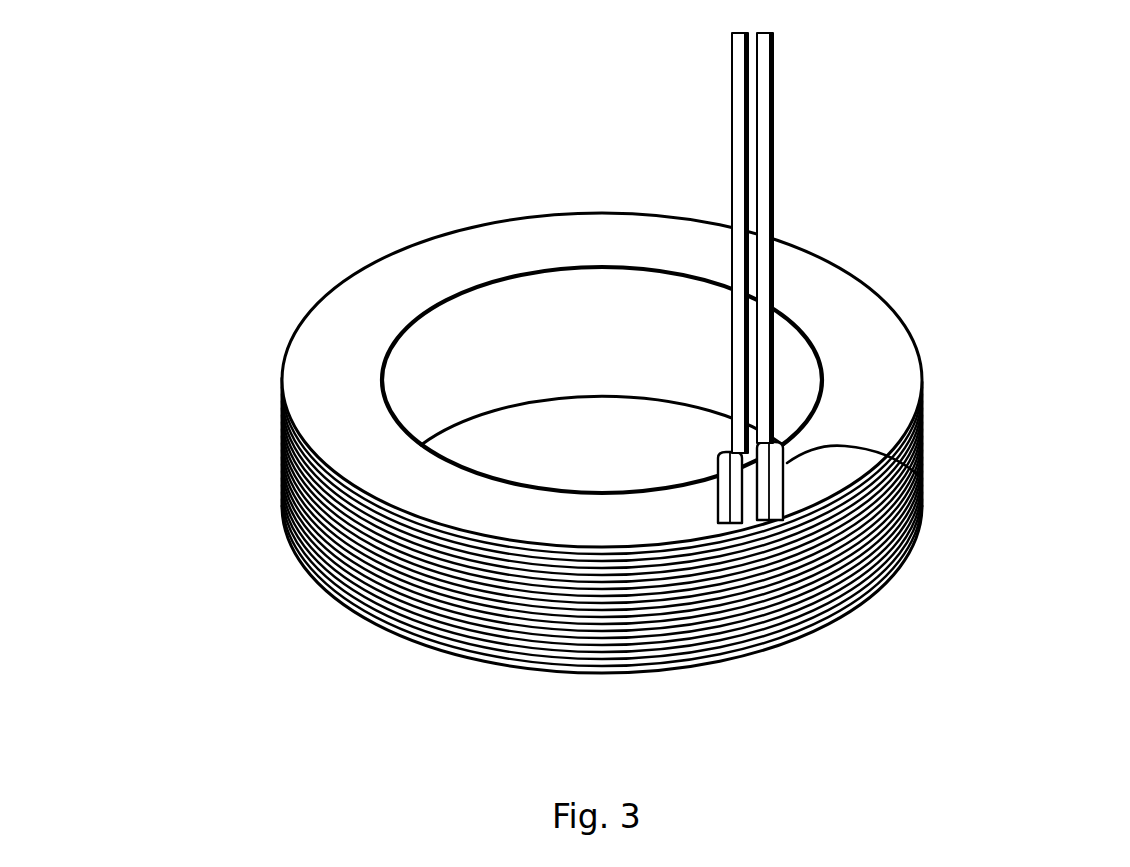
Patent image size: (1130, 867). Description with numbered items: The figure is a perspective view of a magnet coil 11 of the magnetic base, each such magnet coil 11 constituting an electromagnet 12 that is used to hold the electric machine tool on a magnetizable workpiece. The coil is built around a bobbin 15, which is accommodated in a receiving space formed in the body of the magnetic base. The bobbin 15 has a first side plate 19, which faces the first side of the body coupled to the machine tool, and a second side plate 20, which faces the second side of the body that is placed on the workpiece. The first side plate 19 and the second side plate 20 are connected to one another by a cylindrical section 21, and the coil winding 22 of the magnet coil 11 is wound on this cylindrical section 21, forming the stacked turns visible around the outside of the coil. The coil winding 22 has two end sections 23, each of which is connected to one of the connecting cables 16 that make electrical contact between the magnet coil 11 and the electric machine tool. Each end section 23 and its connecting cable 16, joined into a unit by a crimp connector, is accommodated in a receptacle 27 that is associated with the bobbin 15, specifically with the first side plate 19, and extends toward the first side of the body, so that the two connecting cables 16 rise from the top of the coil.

The magnet coil 11 is at (595, 399).
The electromagnet 12 is at (595, 399).
The bobbin 15 is at (332, 634).
The connecting cable 16 is at (737, 118).
The first side plate 19 is at (875, 378).
The second side plate 20 is at (830, 622).
The cylindrical section 21 is at (503, 325).
The coil winding 22 is at (285, 506).
The end section 23 is at (728, 527).
The receptacle 27 is at (918, 475).